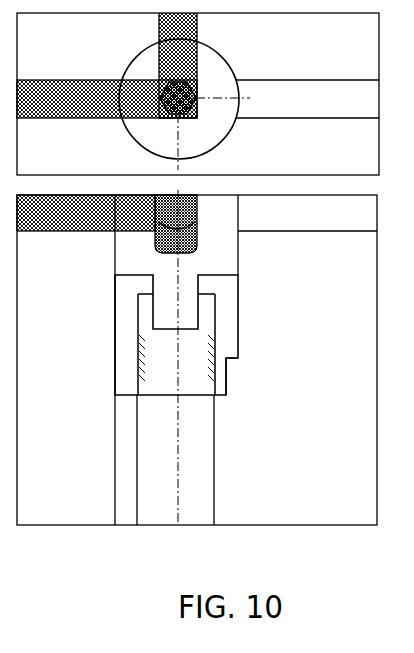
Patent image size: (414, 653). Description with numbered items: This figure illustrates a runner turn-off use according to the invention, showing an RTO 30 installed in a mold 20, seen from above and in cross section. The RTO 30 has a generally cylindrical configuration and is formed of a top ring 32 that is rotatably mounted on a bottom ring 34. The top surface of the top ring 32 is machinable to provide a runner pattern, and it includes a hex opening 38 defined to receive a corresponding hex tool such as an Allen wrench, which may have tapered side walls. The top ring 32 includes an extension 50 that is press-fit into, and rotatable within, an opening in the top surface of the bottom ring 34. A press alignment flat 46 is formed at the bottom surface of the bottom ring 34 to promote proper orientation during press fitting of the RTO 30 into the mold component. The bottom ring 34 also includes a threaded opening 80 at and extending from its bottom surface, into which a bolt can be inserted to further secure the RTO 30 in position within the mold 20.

The mold 20 is at (53, 61).
The RTO 30 is at (228, 66).
The top ring 32 is at (228, 256).
The bottom ring 34 is at (228, 360).
The hex opening 38 is at (192, 112).
The press alignment flat 46 is at (228, 382).
The extension 50 is at (163, 306).
The threaded opening 80 is at (152, 388).